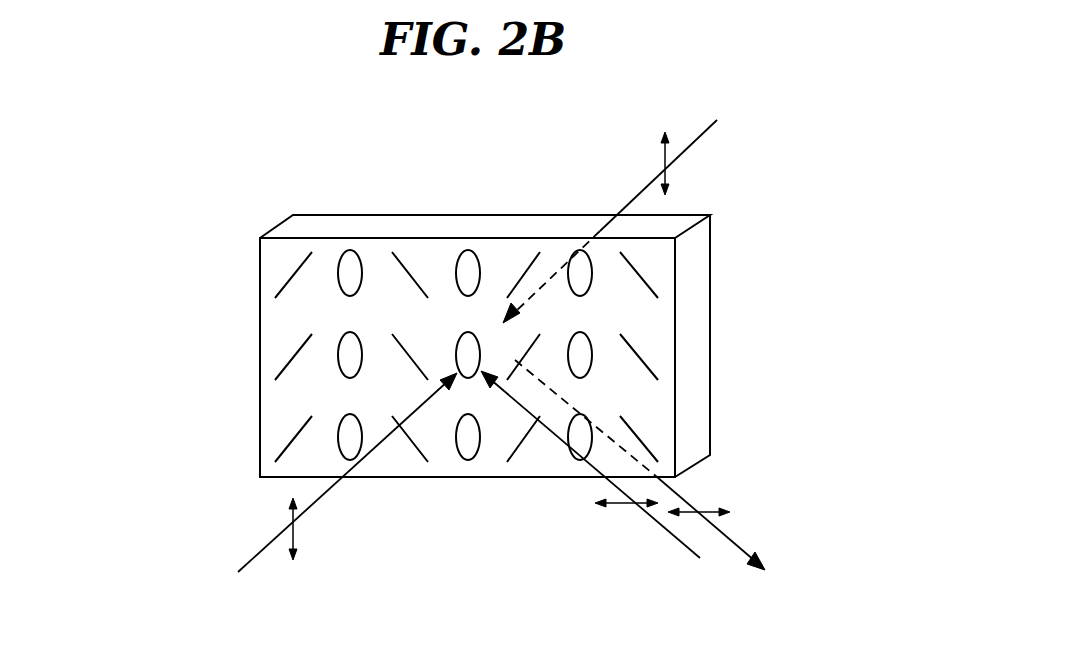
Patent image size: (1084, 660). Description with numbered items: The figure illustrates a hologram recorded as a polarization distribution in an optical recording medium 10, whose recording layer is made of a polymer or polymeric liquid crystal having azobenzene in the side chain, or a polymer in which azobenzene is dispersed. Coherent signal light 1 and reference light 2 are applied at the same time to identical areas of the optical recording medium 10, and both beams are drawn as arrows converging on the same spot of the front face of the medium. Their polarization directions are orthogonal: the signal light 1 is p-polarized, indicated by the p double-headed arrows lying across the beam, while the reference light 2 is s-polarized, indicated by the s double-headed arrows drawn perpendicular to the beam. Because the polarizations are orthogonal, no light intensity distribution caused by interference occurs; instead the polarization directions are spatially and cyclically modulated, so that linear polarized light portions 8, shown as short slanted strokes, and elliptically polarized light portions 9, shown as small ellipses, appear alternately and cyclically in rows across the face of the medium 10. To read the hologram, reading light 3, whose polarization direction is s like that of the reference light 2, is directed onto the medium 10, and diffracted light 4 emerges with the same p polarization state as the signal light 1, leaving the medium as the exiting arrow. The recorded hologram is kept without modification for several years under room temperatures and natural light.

The signal light 1 is at (690, 548).
The reference light 2 is at (262, 550).
The hologram reading light 3 is at (705, 132).
The diffracted light 4 is at (737, 545).
The linear polarized light portions 8 is at (407, 268).
The elliptically polarized light portions 9 is at (472, 250).
The optical recording medium 10 is at (705, 292).
The s-polarization s is at (320, 540).
The p-polarization p is at (708, 512).